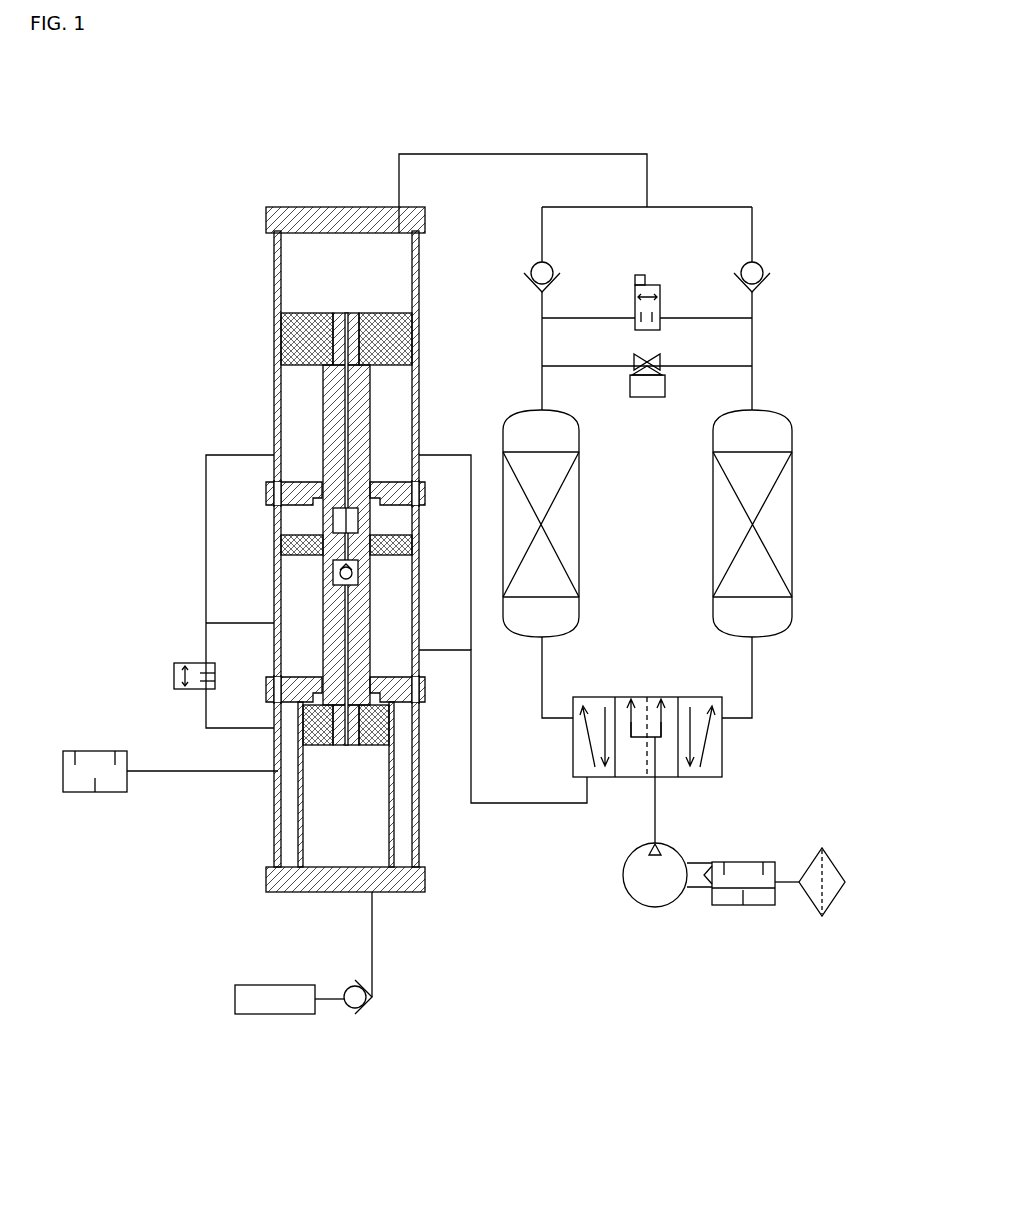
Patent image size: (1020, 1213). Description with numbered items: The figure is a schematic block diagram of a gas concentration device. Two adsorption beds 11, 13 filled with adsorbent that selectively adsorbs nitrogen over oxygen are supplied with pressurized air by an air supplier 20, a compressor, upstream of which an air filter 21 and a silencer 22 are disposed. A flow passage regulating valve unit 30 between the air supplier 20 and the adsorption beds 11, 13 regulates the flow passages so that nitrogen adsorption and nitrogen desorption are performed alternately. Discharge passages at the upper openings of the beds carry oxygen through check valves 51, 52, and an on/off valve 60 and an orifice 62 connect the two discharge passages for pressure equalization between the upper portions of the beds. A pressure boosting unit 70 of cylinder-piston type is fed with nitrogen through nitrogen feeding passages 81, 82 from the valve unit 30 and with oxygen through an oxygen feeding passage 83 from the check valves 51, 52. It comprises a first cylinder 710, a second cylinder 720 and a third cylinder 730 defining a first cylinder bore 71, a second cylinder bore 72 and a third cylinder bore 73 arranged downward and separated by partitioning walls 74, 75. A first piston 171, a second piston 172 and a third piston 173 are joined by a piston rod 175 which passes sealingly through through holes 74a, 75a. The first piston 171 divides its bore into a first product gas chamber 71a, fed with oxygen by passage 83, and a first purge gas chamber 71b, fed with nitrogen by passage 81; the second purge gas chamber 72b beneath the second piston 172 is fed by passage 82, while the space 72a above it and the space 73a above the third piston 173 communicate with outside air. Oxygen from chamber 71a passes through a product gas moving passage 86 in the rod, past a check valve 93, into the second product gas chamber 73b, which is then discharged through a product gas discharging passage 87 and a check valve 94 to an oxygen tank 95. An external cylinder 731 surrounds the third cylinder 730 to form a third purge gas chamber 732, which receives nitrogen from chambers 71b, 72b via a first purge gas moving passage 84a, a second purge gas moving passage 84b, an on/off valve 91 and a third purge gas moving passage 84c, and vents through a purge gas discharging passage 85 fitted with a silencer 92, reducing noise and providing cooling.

The first adsorption bed 11 is at (580, 547).
The second adsorption bed 13 is at (793, 547).
The air supplier 20 is at (650, 906).
The air filter 21 is at (812, 906).
The silencer 22 is at (728, 906).
The flow passage regulating valve unit 30 is at (727, 753).
The check valve 51 is at (530, 262).
The check valve 52 is at (765, 262).
The on/off valve 60 is at (660, 285).
The orifice 62 is at (647, 398).
The pressure boosting unit 70 is at (338, 190).
The first cylinder bore 71 is at (271, 305).
The first product gas chamber 71a is at (300, 272).
The first purge gas chamber 71b is at (293, 377).
The second cylinder bore 72 is at (247, 597).
The space above second piston 72a is at (295, 520).
The second purge gas chamber 72b is at (297, 570).
The third cylinder bore 73 is at (237, 786).
The space above third piston 73a is at (315, 788).
The second product gas chamber 73b is at (290, 828).
The partitioning wall 74 is at (270, 490).
The through hole 74a is at (318, 480).
The partitioning wall 75 is at (280, 688).
The through hole 75a is at (270, 680).
The nitrogen feeding passage 81 is at (438, 440).
The nitrogen feeding passage 82 is at (434, 652).
The oxygen feeding passage 83 is at (511, 153).
The first purge gas moving passage 84a is at (220, 455).
The second purge gas moving passage 84b is at (235, 623).
The third purge gas moving passage 84c is at (210, 728).
The purge gas discharging passage 85 is at (150, 768).
The product gas moving passage 86 is at (333, 447).
The product gas discharging passage 87 is at (375, 940).
The on/off valve 91 is at (174, 672).
The silencer 92 is at (73, 793).
The check valve 93 is at (358, 584).
The check valve 94 is at (360, 1012).
The oxygen tank 95 is at (293, 1015).
The first piston 171 is at (397, 318).
The second piston 172 is at (395, 538).
The third piston 173 is at (385, 737).
The piston rod 175 is at (330, 413).
The first cylinder 710 is at (258, 238).
The second cylinder 720 is at (282, 592).
The third cylinder 730 is at (300, 850).
The external cylinder 731 is at (268, 856).
The third purge gas chamber 732 is at (277, 855).